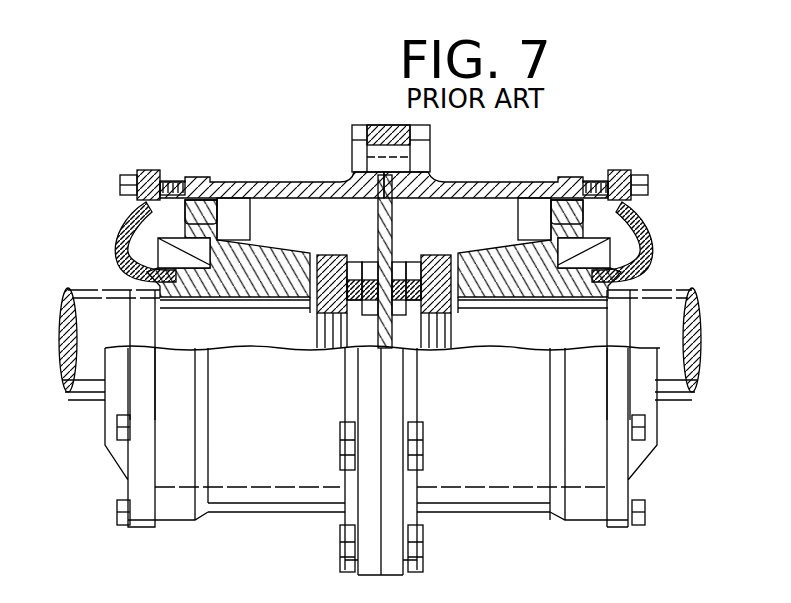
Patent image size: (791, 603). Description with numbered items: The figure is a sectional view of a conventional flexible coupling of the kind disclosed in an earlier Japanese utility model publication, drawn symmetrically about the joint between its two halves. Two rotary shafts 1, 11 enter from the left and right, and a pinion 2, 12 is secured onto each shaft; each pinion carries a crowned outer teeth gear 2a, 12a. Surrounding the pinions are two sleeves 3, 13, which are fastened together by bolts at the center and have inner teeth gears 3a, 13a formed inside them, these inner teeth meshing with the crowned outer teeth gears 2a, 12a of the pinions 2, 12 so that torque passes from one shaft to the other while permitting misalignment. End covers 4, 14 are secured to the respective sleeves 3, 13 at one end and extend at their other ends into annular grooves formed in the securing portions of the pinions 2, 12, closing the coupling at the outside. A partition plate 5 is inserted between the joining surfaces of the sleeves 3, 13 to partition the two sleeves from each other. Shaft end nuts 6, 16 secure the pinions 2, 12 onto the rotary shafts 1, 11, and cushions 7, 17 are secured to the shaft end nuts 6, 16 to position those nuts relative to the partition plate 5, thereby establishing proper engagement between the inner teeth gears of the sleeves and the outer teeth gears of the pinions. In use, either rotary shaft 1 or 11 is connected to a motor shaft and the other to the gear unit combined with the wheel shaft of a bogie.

The rotary shaft 1 is at (88, 290).
The pinion 2 is at (297, 254).
The crowned outer teeth gear 2a is at (200, 200).
The sleeve 3 is at (305, 181).
The inner teeth gear 3a is at (232, 207).
The end cover 4 is at (120, 232).
The partition plate 5 is at (378, 210).
The shaft end nut 6 is at (330, 262).
The cushion 7 is at (358, 272).
The rotary shaft 11 is at (688, 290).
The pinion 12 is at (465, 256).
The crowned outer teeth gear 12a is at (565, 205).
The sleeve 13 is at (440, 183).
The inner teeth gear 13a is at (535, 207).
The end cover 14 is at (650, 236).
The shaft end nut 16 is at (437, 262).
The cushion 17 is at (403, 272).